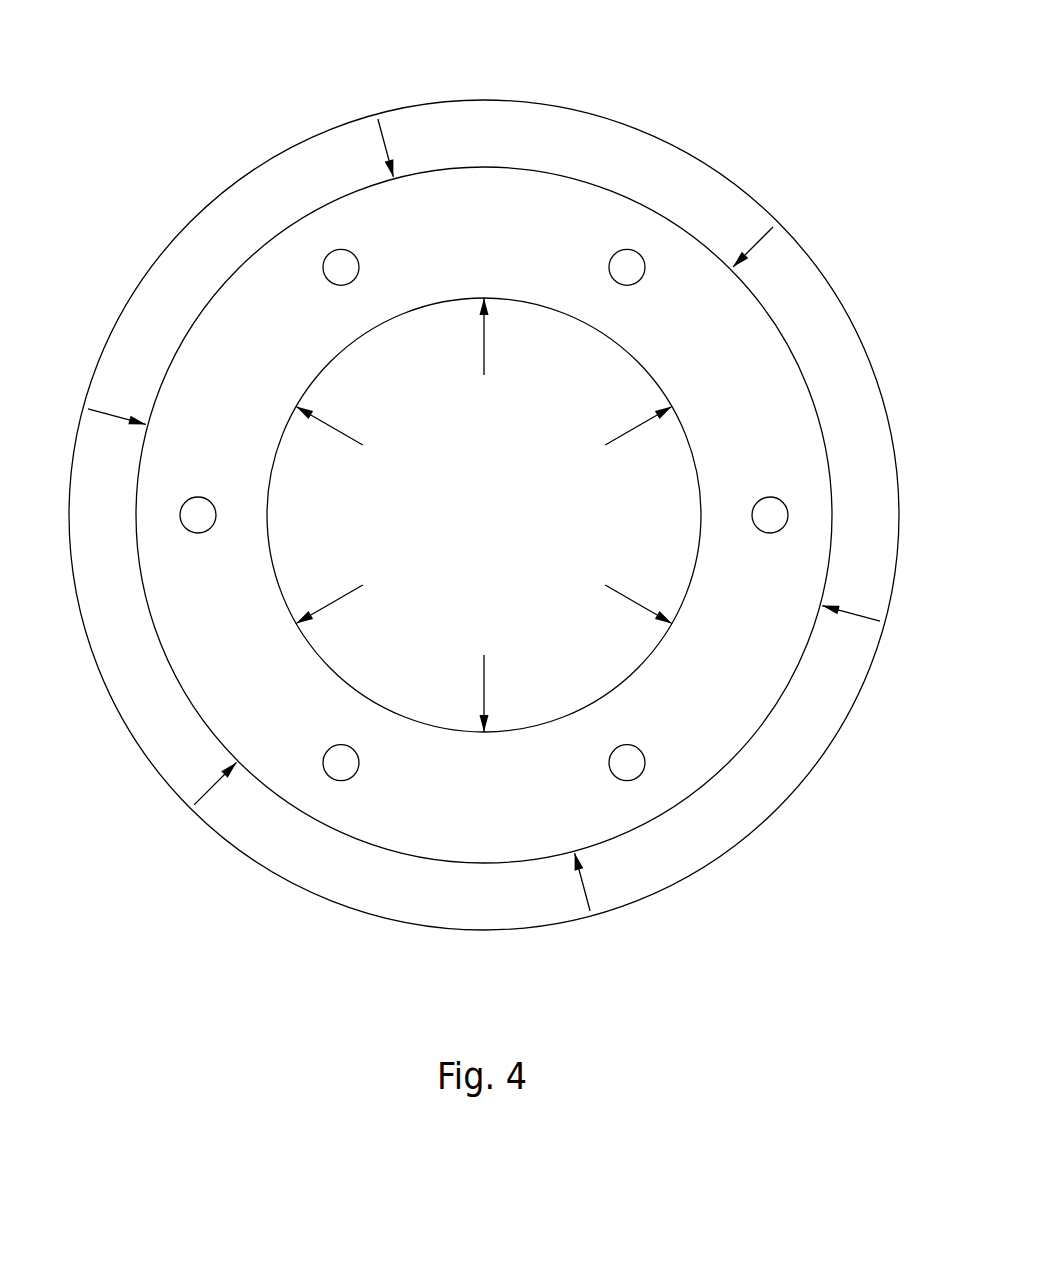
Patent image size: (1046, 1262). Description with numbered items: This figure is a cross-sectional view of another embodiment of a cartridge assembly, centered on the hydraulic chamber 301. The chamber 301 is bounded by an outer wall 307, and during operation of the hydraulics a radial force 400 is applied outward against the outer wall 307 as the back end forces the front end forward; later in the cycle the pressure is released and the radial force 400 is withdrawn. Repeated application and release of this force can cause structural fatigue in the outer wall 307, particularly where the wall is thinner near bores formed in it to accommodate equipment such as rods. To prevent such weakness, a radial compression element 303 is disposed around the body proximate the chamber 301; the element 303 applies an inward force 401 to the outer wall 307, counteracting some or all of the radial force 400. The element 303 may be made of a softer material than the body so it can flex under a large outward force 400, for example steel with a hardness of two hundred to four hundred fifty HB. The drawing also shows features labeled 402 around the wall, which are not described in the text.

The hydraulic chamber 301 is at (515, 608).
The radial compression element 303 is at (218, 250).
The outer wall 307 is at (523, 230).
The radial force 400 is at (625, 435).
The inward force 401 is at (773, 227).
The bolt holes 402 is at (340, 762).